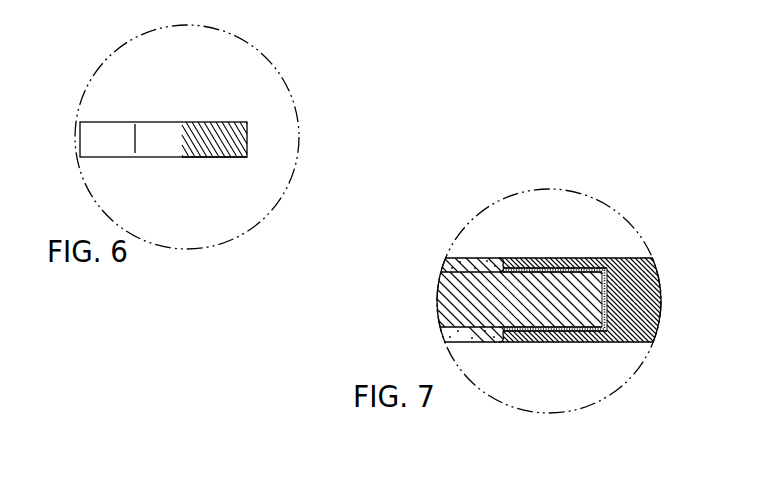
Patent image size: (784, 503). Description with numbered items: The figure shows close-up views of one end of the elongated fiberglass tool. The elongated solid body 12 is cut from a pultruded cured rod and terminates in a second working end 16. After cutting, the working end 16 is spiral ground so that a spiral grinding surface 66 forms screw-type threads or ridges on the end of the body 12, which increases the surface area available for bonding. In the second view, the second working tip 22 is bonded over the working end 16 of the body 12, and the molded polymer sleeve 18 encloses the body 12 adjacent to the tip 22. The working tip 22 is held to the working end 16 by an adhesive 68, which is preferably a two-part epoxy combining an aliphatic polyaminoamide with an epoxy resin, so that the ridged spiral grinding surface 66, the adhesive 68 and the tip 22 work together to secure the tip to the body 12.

In FIG. 6, the elongated solid body 12 is at (112, 121).
In FIG. 7, the elongated solid body 12 is at (443, 295).
In FIG. 6, the second working end 16 is at (222, 157).
In FIG. 7, the second working end 16 is at (522, 313).
In FIG. 6, the spiral grinding surface 66 is at (223, 122).
In FIG. 7, the molded polymer sleeve 18 is at (480, 260).
In FIG. 7, the second working tip 22 is at (638, 270).
In FIG. 7, the adhesive 68 is at (580, 332).